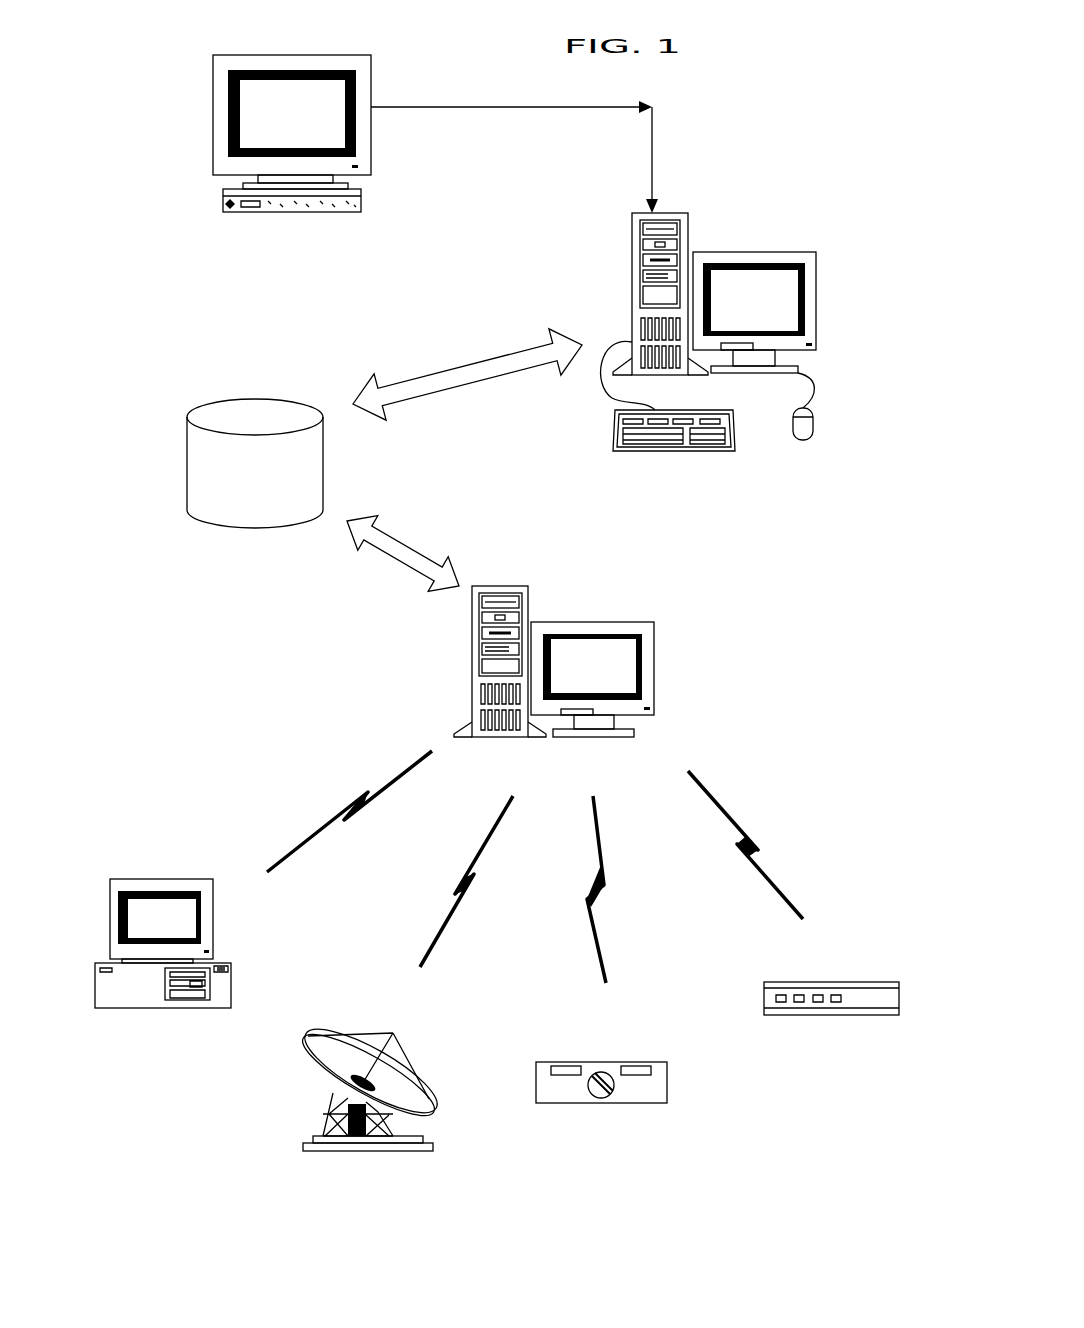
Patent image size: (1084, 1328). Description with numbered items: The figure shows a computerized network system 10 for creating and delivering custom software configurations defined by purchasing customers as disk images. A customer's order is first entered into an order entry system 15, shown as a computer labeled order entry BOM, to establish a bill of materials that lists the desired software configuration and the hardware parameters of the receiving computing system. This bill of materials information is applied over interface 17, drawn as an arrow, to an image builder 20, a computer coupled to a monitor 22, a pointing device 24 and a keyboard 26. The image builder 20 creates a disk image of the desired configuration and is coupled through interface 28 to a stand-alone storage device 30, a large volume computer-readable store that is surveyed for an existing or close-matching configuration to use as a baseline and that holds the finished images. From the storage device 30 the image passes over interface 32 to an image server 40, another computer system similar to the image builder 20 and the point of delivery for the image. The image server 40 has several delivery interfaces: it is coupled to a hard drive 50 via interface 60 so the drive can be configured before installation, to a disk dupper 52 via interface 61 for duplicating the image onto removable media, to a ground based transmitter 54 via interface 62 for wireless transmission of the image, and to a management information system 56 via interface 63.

The computerized network system 10 is at (777, 132).
The order entry system 15 is at (214, 68).
The interface 17 is at (448, 99).
The image builder 20 is at (659, 204).
The monitor 22 is at (759, 242).
The pointing device 24 is at (803, 428).
The keyboard 26 is at (645, 444).
The interface 28 is at (415, 380).
The storage device 30 is at (212, 402).
The interface 32 is at (389, 544).
The image server 40 is at (499, 578).
The hard drive 50 is at (788, 974).
The disk dupper 52 is at (605, 1052).
The ground based transmitter 54 is at (308, 1043).
The management information system 56 is at (205, 926).
The interface 60 is at (729, 849).
The interface 61 is at (572, 881).
The interface 62 is at (452, 860).
The interface 63 is at (327, 793).